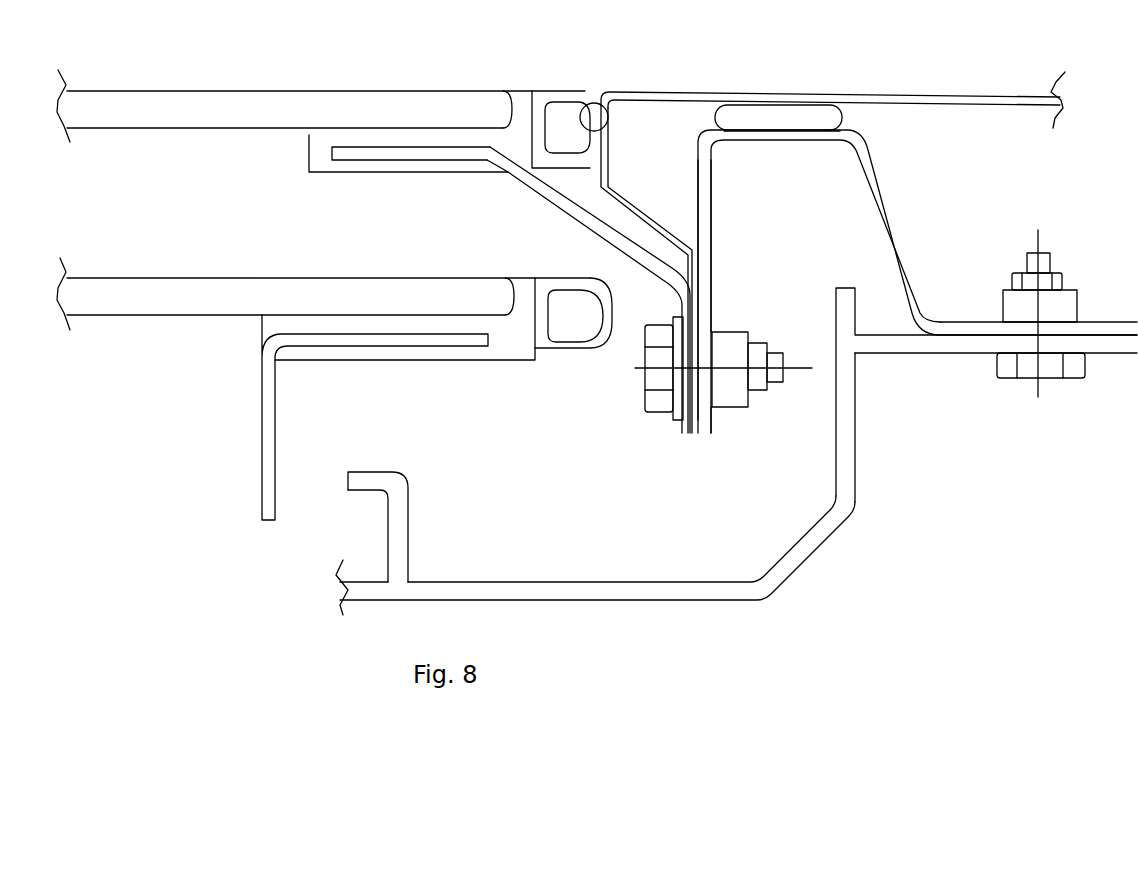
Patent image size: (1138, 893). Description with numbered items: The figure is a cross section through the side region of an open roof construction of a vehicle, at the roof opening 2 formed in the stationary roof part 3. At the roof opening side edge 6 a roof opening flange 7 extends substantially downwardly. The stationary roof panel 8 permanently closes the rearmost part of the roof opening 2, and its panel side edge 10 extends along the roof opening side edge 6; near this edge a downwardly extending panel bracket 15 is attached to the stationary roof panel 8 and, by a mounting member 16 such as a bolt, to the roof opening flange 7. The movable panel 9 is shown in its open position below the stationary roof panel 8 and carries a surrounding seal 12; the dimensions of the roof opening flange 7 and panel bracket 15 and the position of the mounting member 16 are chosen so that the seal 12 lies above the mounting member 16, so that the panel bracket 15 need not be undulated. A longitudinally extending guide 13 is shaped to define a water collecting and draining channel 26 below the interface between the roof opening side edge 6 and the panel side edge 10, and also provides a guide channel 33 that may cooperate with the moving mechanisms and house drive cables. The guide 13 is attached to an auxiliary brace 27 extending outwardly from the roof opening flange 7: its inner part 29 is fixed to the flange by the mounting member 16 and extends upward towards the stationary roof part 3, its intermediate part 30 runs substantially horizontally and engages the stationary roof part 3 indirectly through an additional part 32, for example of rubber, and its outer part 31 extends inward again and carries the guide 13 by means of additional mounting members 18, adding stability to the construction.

The roof opening 2 is at (570, 180).
The stationary roof part 3 is at (935, 100).
The roof opening side edges 6 is at (586, 100).
The roof opening flanges 7 is at (648, 190).
The stationary roof panel 8 is at (298, 100).
The movable panel 9 is at (315, 290).
The panel side edges 10 is at (541, 121).
The seal 12 is at (578, 348).
The guide 13 is at (717, 587).
The panel bracket 15 is at (557, 205).
The mounting member 16 is at (654, 381).
The bolt 18 is at (1052, 367).
The water collecting and draining channel 26 is at (590, 580).
The auxiliary brace 27 is at (893, 208).
The inner part 29 is at (704, 228).
The intermediate part 30 is at (798, 137).
The outer part 31 is at (965, 325).
The additional part 32 is at (773, 100).
The guide channel 33 is at (367, 568).